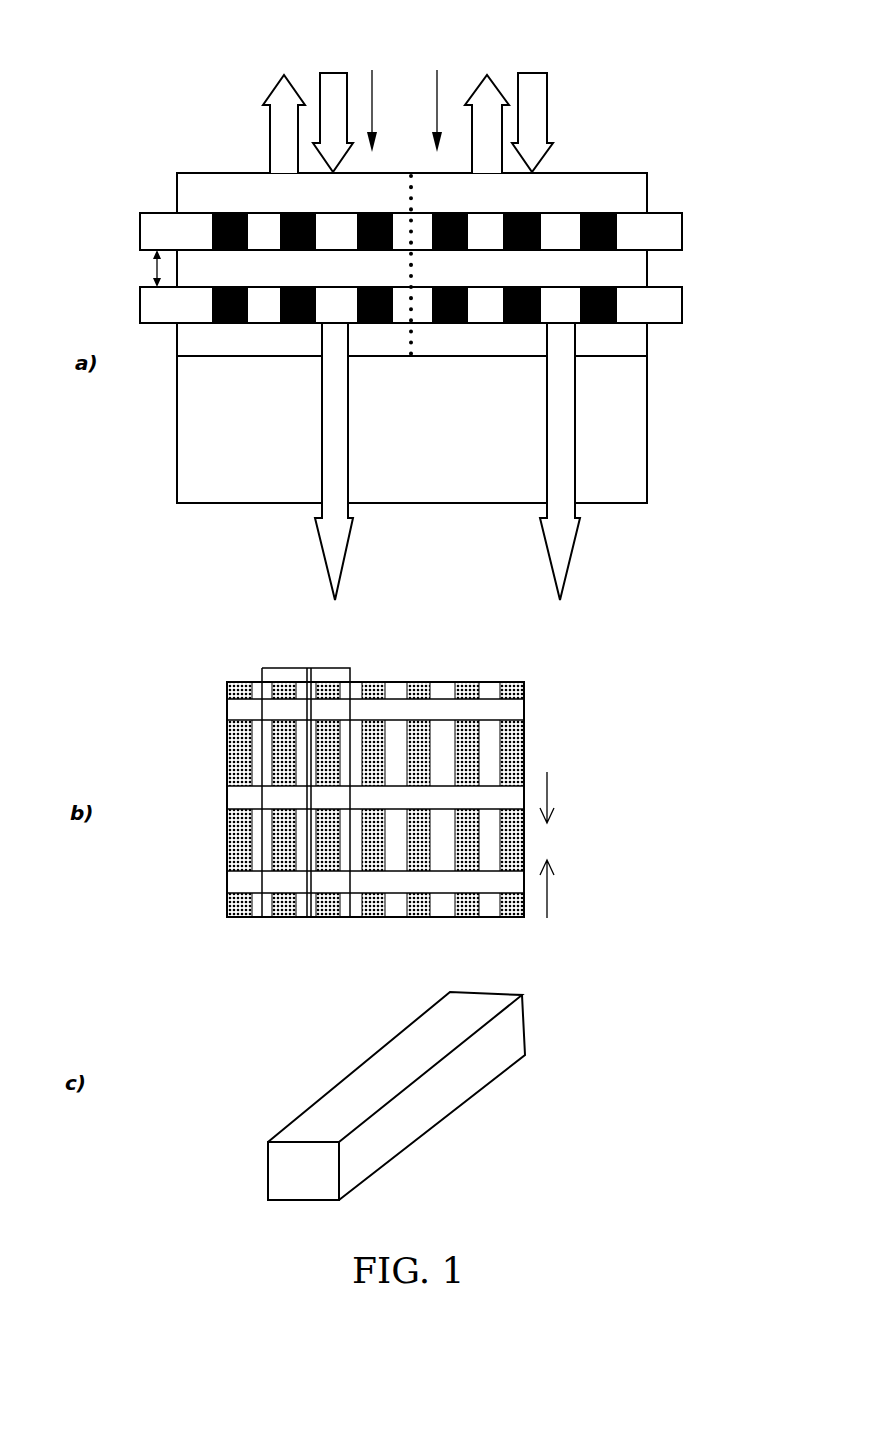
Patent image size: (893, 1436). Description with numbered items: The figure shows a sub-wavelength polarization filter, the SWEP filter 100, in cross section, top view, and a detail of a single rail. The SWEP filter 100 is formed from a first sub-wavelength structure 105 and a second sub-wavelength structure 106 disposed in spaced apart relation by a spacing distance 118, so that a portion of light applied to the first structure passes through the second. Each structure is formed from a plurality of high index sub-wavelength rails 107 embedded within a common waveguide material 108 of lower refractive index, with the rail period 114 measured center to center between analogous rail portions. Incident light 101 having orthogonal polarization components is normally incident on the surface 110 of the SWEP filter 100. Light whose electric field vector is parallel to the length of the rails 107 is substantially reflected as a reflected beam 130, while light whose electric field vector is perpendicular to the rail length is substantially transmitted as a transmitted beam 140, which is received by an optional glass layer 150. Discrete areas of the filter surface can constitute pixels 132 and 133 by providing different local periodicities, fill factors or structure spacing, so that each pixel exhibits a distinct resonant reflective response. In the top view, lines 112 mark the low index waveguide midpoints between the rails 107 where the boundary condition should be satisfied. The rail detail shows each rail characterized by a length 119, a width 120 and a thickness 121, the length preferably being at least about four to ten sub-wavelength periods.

The SWEP filter 100 is at (684, 255).
The incident light 101 is at (333, 73).
The first sub-wavelength structure 105 is at (140, 222).
The second sub-wavelength structure 106 is at (140, 305).
The sub-wavelength rails 107 is at (617, 232).
The waveguide material 108 is at (647, 173).
The surface 110 is at (177, 173).
The lines at waveguide midpoints 112 is at (350, 668).
The rail period 114 is at (632, 173).
The spacing distance 118 is at (157, 268).
The rail length 119 is at (250, 988).
The rail width 120 is at (303, 1202).
The rail thickness 121 is at (268, 1170).
The reflected beam 130 is at (275, 85).
The pixel 132 is at (372, 97).
The pixel 133 is at (434, 97).
The transmitted beam 140 is at (322, 556).
The glass layer 150 is at (647, 428).